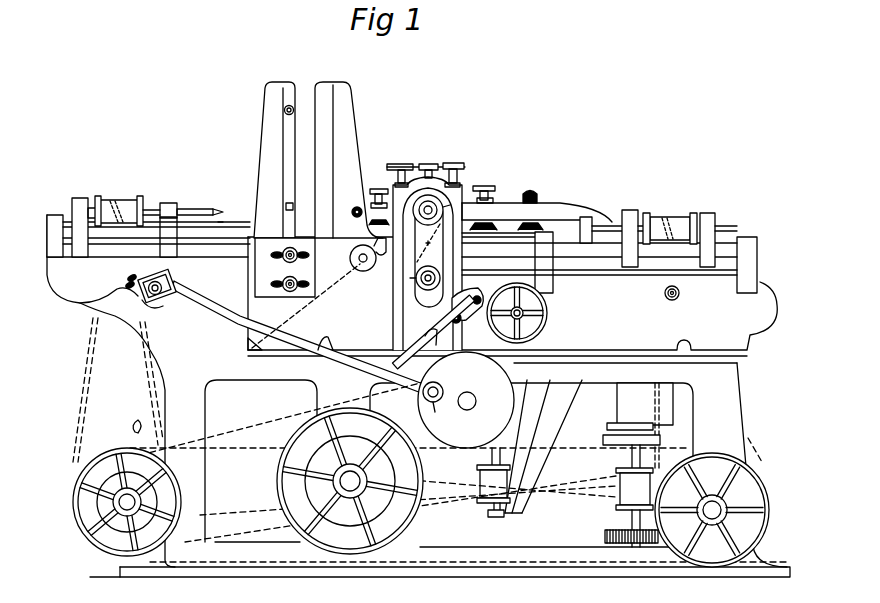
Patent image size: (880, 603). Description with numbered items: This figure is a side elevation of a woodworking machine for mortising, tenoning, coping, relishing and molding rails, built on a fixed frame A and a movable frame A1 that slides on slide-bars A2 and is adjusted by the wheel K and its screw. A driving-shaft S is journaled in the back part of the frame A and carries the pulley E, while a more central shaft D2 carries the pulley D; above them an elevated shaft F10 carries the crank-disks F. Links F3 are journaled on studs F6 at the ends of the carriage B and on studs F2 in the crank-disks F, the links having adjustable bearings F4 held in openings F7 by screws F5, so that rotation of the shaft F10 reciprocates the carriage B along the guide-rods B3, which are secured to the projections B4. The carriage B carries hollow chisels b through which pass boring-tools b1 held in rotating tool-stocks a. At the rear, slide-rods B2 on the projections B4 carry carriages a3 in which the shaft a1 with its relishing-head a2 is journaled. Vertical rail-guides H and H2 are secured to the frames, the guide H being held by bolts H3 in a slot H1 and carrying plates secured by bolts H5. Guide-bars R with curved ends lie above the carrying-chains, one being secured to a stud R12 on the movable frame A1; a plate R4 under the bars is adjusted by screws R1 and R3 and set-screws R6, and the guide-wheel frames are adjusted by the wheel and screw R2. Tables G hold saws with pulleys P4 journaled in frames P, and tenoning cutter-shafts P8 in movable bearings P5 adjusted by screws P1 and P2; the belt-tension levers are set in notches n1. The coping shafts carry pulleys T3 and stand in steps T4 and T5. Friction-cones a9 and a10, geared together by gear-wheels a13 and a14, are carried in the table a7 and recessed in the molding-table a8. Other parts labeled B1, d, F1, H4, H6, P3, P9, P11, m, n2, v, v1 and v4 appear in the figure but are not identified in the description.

The frame A is at (418, 398).
The movable frame A1 is at (593, 309).
The slide-bars A2 is at (684, 340).
The carriage B is at (156, 245).
The spindle bar B1 is at (622, 258).
The slide-rods B2 is at (722, 248).
The guide-rods B3 is at (78, 212).
The projections B4 is at (47, 216).
The tool-stocks a is at (120, 205).
The shaft a1 is at (676, 214).
The relishing-head a2 is at (590, 214).
The carriages a3 is at (632, 210).
The plate or table a7 is at (604, 438).
The molding-table a8 is at (612, 423).
The friction-cone a9 is at (645, 426).
The friction-cone a10 is at (634, 477).
The gear-wheel a13 is at (624, 527).
The gear-wheel a14 is at (682, 525).
The hollow chisels b is at (196, 208).
The boring-tools b1 is at (222, 210).
The pin d is at (226, 215).
The pulley D is at (460, 500).
The shaft D2 is at (350, 492).
The pulley E is at (765, 485).
The driving-shaft S is at (110, 515).
The tables G is at (246, 390).
The wheel K is at (543, 298).
The crank-disks F is at (466, 400).
The pin F1 is at (441, 387).
The studs F2 is at (438, 412).
The links F3 is at (304, 339).
The adjustable bearings F4 is at (158, 276).
The screw F5 is at (136, 276).
The studs F6 is at (148, 300).
The openings F7 is at (156, 296).
The shaft F10 is at (474, 399).
The vertical rail-guide H is at (278, 172).
The slot H1 is at (276, 251).
The vertical rail-guide H2 is at (345, 135).
The bolts H3 is at (296, 250).
The knob H4 is at (290, 284).
The bolts H5 is at (294, 110).
The slide H6 is at (293, 206).
The frames P is at (427, 263).
The screw P1 is at (458, 163).
The screw P2 is at (404, 164).
The pin P3 is at (451, 205).
The pulleys P4 is at (381, 247).
The movable bearings P5 is at (368, 262).
The tenoning cutter-shafts P8 is at (413, 210).
The roller P9 is at (440, 278).
The pin P11 is at (407, 271).
The guide-bars R is at (599, 230).
The screws R1 is at (490, 194).
The wheel and screw R2 is at (429, 164).
The screws R3 is at (377, 198).
The plate R4 is at (357, 206).
The set-screws R6 is at (533, 189).
The stud R12 is at (683, 293).
The pulleys T3 is at (493, 475).
The step T4 is at (488, 516).
The step T5 is at (546, 446).
The pin m is at (453, 310).
The notches n1 is at (423, 332).
The stop n2 is at (334, 342).
The arm v is at (468, 297).
The pin v1 is at (485, 296).
The rod v4 is at (434, 335).